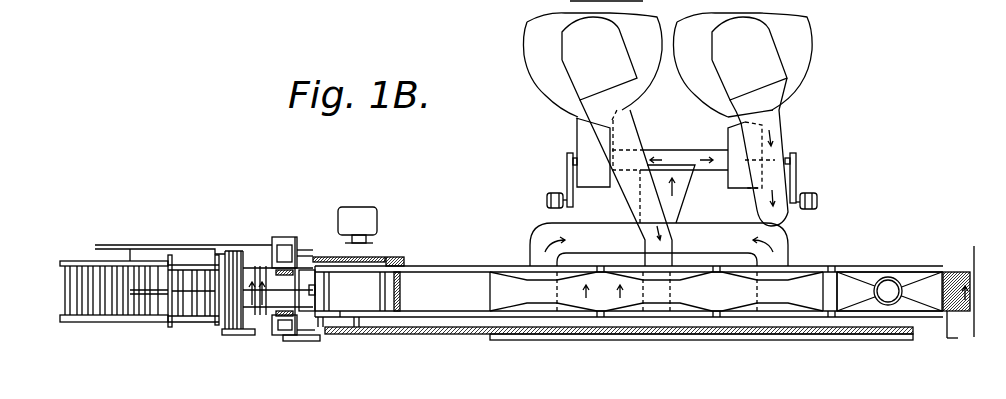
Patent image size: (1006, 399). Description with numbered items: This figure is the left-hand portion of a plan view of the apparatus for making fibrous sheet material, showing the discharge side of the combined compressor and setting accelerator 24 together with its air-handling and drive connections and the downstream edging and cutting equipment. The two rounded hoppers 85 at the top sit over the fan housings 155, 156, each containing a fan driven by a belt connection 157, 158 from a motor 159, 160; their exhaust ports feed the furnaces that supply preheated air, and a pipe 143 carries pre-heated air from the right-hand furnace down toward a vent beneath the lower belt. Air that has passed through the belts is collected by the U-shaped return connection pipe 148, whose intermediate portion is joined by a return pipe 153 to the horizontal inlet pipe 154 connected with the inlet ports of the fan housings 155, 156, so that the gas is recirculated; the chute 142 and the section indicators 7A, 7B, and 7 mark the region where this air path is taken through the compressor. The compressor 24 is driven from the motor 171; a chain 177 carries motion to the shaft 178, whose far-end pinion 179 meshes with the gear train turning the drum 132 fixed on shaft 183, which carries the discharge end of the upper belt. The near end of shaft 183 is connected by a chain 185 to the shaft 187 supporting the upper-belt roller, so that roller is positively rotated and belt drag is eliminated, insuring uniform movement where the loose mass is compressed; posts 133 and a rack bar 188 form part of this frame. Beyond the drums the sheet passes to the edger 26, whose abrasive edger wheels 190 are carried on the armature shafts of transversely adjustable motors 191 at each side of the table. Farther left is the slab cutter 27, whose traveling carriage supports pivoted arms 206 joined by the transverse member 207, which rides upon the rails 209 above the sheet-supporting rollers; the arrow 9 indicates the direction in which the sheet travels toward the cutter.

The hoppers 85 is at (690, 88).
The fan housing 155 is at (585, 138).
The belt connection 157 is at (567, 172).
The motor 159 is at (547, 200).
The inclined feed chute 142 is at (632, 190).
The inlet pipe 154 is at (673, 157).
The return pipe 153 is at (688, 209).
The return connection pipe 148 is at (705, 245).
The fan housing 156 is at (728, 143).
The pipe 143 is at (775, 163).
The belt connection 158 is at (798, 178).
The motor 160 is at (817, 202).
The section line 7A is at (629, 291).
The section line 7B is at (593, 292).
The combined compressor and setting accelerator 24 is at (870, 268).
The section line 7 is at (958, 292).
The shaft 187 is at (953, 326).
The chain 185 is at (478, 334).
The drum 132 is at (366, 305).
The shaft 183 is at (353, 332).
The frame end post 133 is at (395, 272).
The upper rack bar 188 is at (375, 255).
The motor 171 is at (354, 212).
The pinion 179 is at (320, 257).
The edger 26 is at (275, 237).
The motor 191 is at (286, 245).
The edger wheel 190 is at (275, 258).
The chain 177 is at (300, 341).
The shaft 178 is at (320, 341).
The slab cutter 27 is at (206, 247).
The pivoted arm 206 is at (185, 262).
The rail 209 is at (140, 258).
The transverse member 207 is at (167, 320).
The section line 9 is at (51, 289).